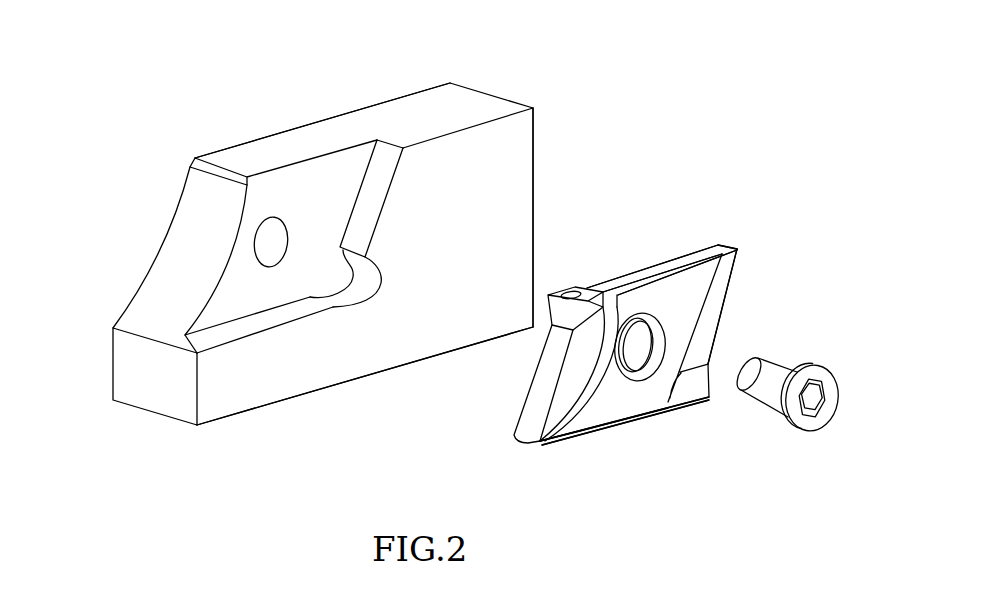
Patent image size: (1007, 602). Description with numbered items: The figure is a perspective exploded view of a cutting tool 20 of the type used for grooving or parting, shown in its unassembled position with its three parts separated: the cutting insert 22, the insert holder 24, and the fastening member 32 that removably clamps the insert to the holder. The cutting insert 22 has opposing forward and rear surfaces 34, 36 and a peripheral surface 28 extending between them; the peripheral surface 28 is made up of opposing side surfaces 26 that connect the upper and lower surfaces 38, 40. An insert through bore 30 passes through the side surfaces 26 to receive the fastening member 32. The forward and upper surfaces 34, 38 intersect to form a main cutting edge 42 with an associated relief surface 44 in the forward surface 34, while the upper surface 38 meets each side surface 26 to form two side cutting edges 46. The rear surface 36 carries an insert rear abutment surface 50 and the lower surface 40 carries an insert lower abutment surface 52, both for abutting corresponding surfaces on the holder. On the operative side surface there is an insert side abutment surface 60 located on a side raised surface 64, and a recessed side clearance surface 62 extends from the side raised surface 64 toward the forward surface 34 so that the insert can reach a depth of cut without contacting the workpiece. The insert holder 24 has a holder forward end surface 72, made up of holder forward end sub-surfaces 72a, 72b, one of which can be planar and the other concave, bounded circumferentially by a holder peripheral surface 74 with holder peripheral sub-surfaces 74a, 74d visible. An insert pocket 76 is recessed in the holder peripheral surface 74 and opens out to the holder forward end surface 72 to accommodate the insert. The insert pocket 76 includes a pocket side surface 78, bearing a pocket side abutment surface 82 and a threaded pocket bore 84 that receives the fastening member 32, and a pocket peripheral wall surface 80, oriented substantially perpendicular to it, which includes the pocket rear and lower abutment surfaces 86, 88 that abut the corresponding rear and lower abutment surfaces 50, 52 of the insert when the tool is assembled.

The cutting tool 20 is at (624, 64).
The cutting insert 22 is at (752, 216).
The insert holder 24 is at (488, 66).
The side surfaces 26 is at (632, 277).
The peripheral surface 28 is at (710, 252).
The insert through bore 30 is at (640, 372).
The fastening member 32 is at (780, 363).
The forward surface 34 is at (525, 420).
The rear surface 36 is at (727, 305).
The upper surface 38 is at (708, 247).
The lower surface 40 is at (587, 440).
The main cutting edge 42 is at (566, 290).
The relief surface 44 is at (557, 308).
The side cutting edges 46 is at (616, 264).
The insert rear abutment surface 50 is at (727, 293).
The insert lower abutment surface 52 is at (567, 447).
The insert side abutment surface 60 is at (522, 365).
The side clearance surface 62 is at (543, 443).
The side raised surface 64 is at (607, 405).
The holder forward end surface 72 is at (190, 243).
The holder forward end sub-surface 72a is at (155, 302).
The holder forward end sub-surface 72b is at (125, 377).
The holder peripheral surface 74 is at (508, 143).
The holder peripheral sub-surface 74a is at (347, 352).
The holder peripheral sub-surface 74d is at (322, 132).
The insert pocket 76 is at (282, 176).
The pocket side surface 78 is at (310, 168).
The pocket peripheral wall surface 80 is at (383, 157).
The pocket side abutment surface 82 is at (282, 287).
The threaded pocket bore 84 is at (248, 177).
The pocket rear abutment surface 86 is at (378, 188).
The pocket lower abutment surface 88 is at (237, 333).